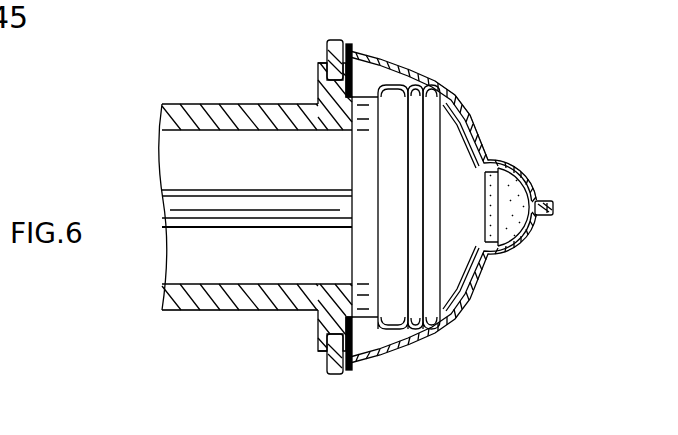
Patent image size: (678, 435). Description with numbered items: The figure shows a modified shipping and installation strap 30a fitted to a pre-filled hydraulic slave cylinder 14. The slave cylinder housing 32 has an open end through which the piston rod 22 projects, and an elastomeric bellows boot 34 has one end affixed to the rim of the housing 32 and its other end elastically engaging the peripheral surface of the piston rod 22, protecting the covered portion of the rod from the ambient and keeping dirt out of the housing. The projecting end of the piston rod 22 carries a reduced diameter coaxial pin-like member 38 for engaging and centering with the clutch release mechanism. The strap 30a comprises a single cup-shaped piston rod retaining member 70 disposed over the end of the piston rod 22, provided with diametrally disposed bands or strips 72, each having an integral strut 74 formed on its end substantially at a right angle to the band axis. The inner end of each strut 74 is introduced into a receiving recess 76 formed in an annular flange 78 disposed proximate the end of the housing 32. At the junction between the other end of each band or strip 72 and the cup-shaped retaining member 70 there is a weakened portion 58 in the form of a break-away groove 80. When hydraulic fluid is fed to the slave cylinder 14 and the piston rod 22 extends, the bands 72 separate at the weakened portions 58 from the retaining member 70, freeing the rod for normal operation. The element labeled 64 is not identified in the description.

The slave cylinder 14 is at (232, 103).
The piston rod 22 is at (266, 212).
The slave cylinder housing 32 is at (244, 303).
The elastomeric bellows boot 34 is at (394, 95).
The pin-like member 38 is at (537, 214).
The weakened portion 58 is at (500, 140).
The nozzle 64 is at (550, 206).
The cup-shaped piston rod retaining member 70 is at (530, 180).
The bands or strips 72 is at (452, 95).
The strut 74 is at (338, 40).
The receiving recess 76 is at (326, 66).
The annular flange 78 is at (318, 95).
The break-away groove 80 is at (499, 158).
The shipping and installation strap 30a is at (489, 116).